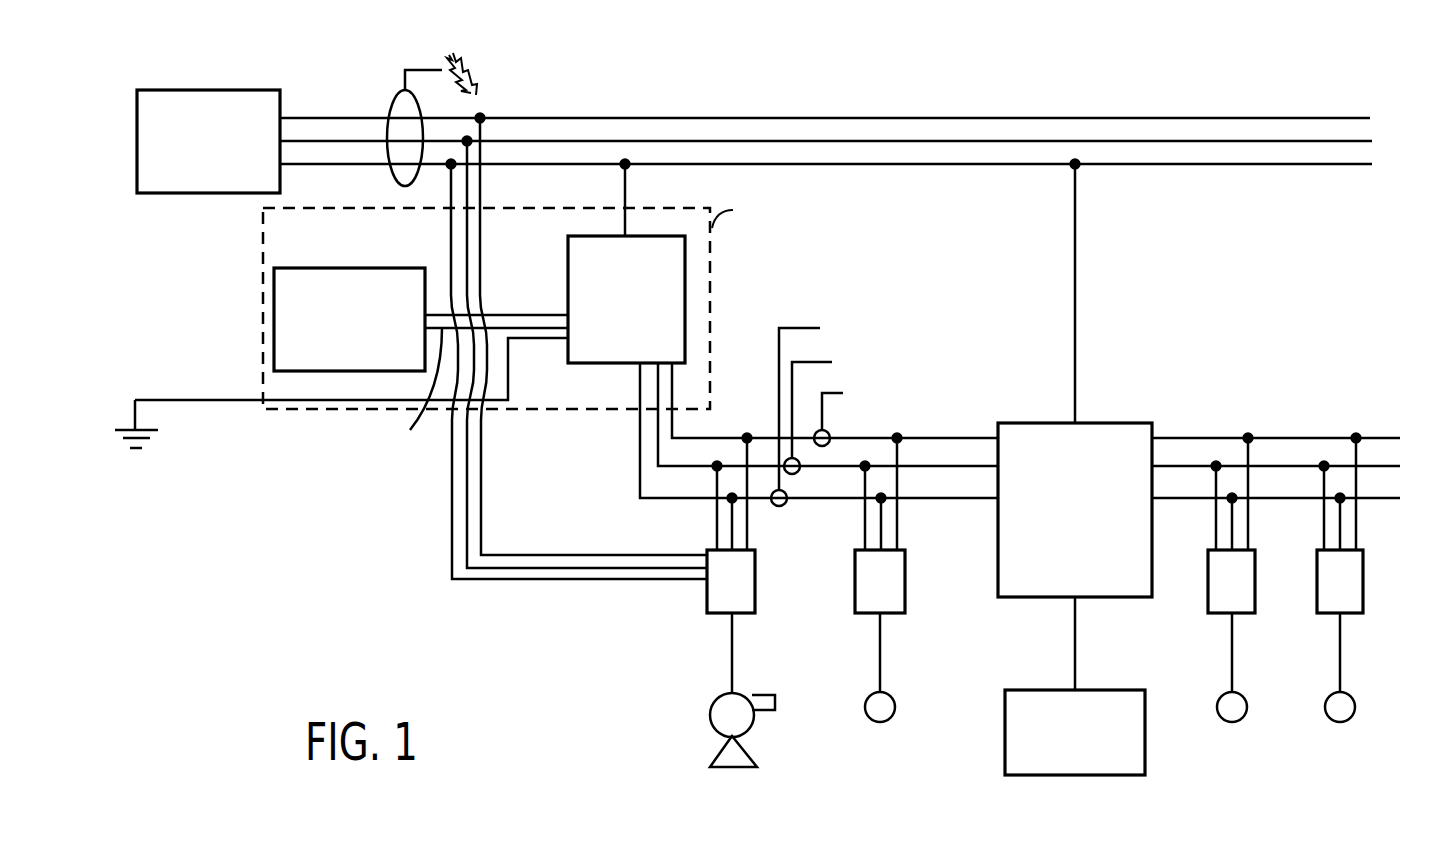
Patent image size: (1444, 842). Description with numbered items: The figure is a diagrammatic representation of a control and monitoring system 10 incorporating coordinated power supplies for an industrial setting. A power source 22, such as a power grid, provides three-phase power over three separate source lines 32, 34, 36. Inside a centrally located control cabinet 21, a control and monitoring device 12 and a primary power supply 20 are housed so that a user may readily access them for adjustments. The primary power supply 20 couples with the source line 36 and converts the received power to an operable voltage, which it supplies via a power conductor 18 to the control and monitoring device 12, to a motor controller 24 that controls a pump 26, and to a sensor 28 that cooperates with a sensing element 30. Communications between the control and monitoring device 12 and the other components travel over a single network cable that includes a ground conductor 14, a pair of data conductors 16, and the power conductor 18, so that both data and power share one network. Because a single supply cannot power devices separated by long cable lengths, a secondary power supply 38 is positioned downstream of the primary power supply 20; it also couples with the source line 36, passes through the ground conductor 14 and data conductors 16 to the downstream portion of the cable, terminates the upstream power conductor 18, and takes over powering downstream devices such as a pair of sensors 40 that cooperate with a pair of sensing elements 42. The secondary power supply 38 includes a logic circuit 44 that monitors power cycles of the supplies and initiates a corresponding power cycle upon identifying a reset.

The control and monitoring system 10 is at (1158, 52).
The control and monitoring device 12 is at (387, 268).
The ground conductor 14 is at (167, 400).
The pair of data conductors 16 is at (817, 520).
The power conductor 18 is at (495, 315).
The primary power supply 20 is at (567, 265).
The control cabinet 21 is at (713, 300).
The power source 22 is at (217, 90).
The motor controller 24 is at (756, 596).
The pump 26 is at (710, 717).
The sensor 28 is at (906, 596).
The sensing element 30 is at (898, 705).
The source line 32 is at (1370, 118).
The source line 34 is at (1372, 141).
The source line 36 is at (1372, 164).
The secondary power supply 38 is at (1133, 423).
The pair of sensors 40 is at (1317, 580).
The pair of sensing elements 42 is at (1325, 705).
The logic circuit 44 is at (1147, 737).